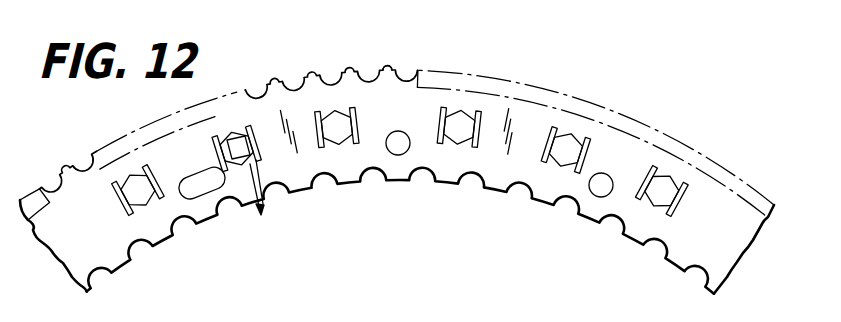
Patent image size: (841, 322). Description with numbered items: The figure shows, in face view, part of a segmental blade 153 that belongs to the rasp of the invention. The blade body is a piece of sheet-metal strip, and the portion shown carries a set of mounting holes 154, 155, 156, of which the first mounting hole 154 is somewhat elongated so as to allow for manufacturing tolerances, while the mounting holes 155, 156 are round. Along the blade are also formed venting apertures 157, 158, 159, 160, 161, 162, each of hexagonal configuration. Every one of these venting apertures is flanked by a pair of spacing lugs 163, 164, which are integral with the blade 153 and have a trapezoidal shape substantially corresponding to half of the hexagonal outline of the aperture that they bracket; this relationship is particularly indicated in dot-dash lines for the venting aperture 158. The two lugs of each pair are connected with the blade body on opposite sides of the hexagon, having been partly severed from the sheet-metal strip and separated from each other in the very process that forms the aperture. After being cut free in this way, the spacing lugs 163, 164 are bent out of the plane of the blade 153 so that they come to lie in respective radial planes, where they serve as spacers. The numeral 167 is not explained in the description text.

The segmental blade 153 is at (707, 237).
The mounting hole 154 is at (193, 188).
The mounting hole 155 is at (398, 150).
The mounting hole 156 is at (590, 186).
The venting aperture 157 is at (128, 175).
The venting aperture 158 is at (233, 132).
The venting aperture 159 is at (336, 110).
The venting aperture 160 is at (462, 110).
The venting aperture 161 is at (570, 134).
The venting aperture 162 is at (670, 176).
The spacing lug 163 is at (220, 140).
The spacing lug 164 is at (279, 199).
The edge tooth 167 is at (380, 69).